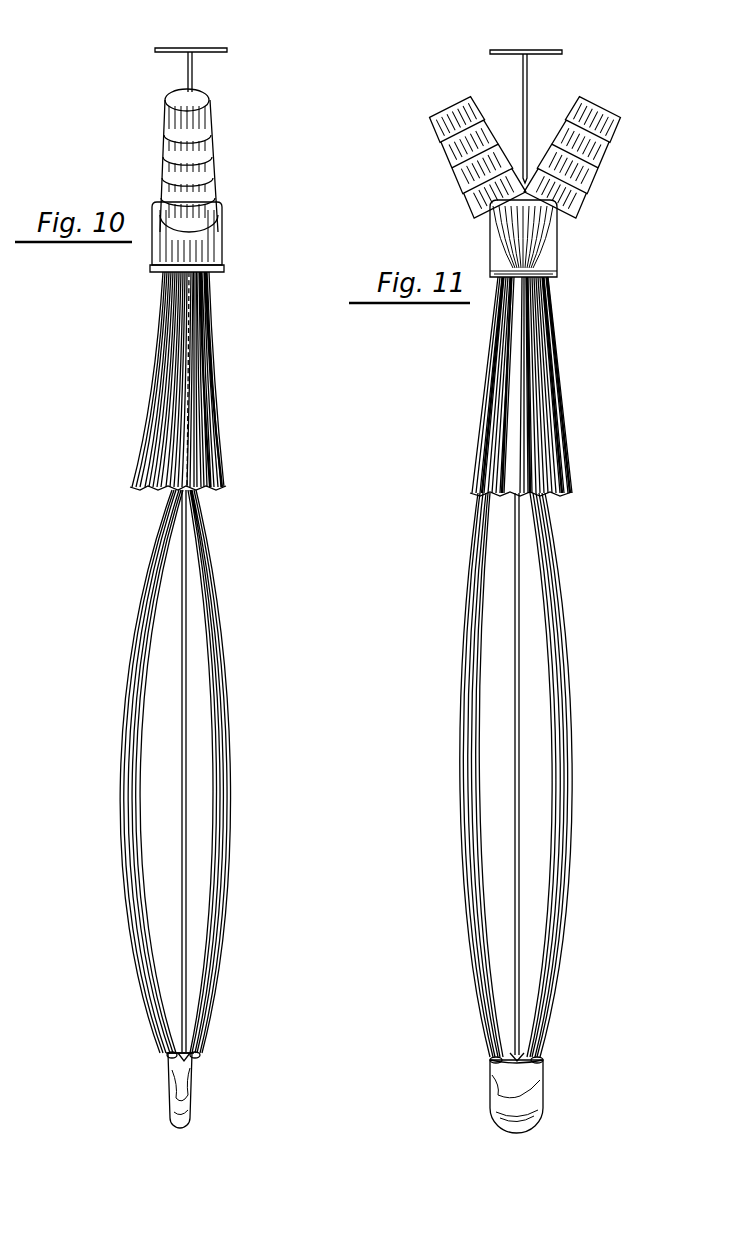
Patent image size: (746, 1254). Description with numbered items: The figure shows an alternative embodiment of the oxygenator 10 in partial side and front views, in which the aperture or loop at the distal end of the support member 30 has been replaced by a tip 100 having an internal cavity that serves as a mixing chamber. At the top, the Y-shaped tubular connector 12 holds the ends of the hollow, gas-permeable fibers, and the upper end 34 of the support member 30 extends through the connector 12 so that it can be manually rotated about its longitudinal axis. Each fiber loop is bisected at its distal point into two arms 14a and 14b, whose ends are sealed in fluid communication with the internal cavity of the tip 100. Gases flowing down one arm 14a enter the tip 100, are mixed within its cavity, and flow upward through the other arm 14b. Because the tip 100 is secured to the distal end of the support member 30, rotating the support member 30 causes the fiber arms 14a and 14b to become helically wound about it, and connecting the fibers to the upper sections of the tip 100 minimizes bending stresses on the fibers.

In FIG. 10, the oxygenator 10 is at (136, 409).
In FIG. 11, the oxygenator 10 is at (571, 404).
In FIG. 10, the Y-shaped tubular connector 12 is at (157, 162).
In FIG. 11, the Y-shaped tubular connector 12 is at (460, 200).
In FIG. 10, the first fiber arm 14a is at (138, 630).
In FIG. 11, the first fiber arm 14a is at (473, 628).
In FIG. 10, the second fiber arm 14b is at (215, 626).
In FIG. 11, the second fiber arm 14b is at (563, 628).
In FIG. 10, the support member 30 is at (183, 795).
In FIG. 11, the support member 30 is at (517, 800).
In FIG. 10, the upper end of the support member 34 is at (187, 68).
In FIG. 11, the upper end of the support member 34 is at (530, 68).
In FIG. 10, the tip 100 is at (165, 1088).
In FIG. 11, the tip 100 is at (542, 1085).